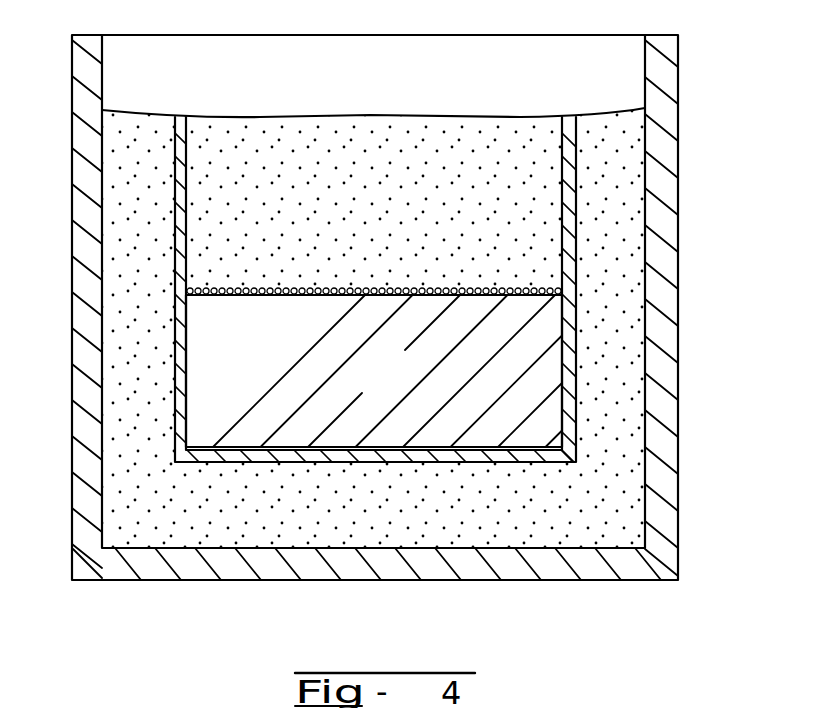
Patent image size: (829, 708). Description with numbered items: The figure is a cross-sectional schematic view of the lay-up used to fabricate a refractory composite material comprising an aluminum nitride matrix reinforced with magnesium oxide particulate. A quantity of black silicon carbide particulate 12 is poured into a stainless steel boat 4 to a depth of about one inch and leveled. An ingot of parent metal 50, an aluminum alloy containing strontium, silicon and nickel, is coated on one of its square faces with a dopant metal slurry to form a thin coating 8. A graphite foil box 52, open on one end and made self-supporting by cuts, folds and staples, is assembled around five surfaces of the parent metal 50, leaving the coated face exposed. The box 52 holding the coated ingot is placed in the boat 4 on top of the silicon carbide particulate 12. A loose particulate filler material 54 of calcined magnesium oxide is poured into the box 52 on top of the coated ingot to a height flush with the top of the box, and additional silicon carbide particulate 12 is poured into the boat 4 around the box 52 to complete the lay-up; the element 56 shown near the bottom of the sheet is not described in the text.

The outer crucible 4 is at (658, 70).
The granular packing material 12 is at (617, 215).
The inner crucible 52 is at (570, 117).
The top granular layer 54 is at (274, 145).
The layer of granules 8 is at (557, 283).
The solid block 50 is at (400, 384).
The cut-off reference element 56 is at (185, 703).